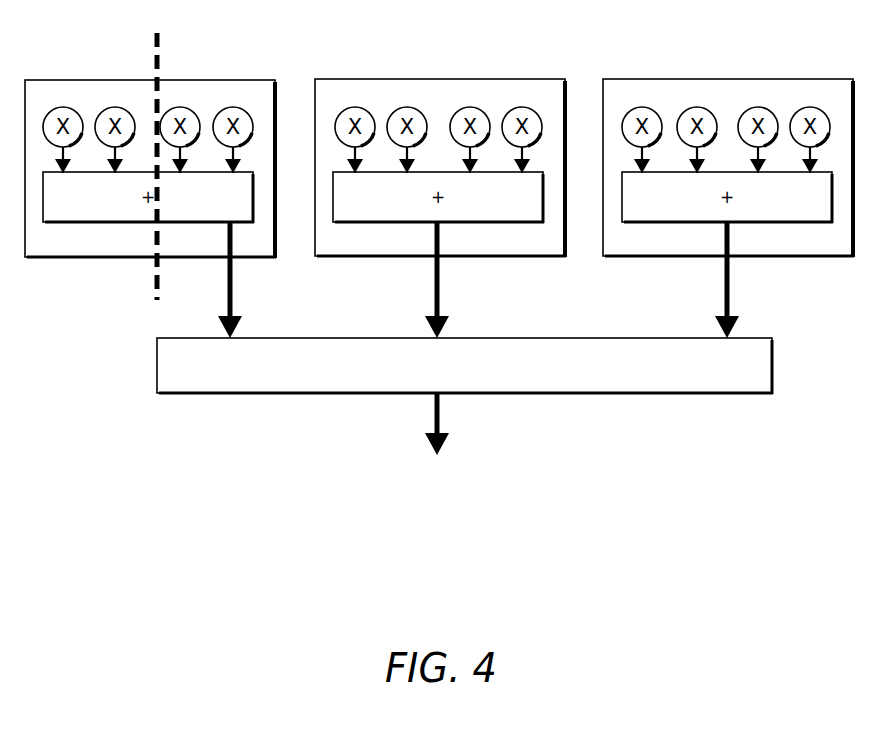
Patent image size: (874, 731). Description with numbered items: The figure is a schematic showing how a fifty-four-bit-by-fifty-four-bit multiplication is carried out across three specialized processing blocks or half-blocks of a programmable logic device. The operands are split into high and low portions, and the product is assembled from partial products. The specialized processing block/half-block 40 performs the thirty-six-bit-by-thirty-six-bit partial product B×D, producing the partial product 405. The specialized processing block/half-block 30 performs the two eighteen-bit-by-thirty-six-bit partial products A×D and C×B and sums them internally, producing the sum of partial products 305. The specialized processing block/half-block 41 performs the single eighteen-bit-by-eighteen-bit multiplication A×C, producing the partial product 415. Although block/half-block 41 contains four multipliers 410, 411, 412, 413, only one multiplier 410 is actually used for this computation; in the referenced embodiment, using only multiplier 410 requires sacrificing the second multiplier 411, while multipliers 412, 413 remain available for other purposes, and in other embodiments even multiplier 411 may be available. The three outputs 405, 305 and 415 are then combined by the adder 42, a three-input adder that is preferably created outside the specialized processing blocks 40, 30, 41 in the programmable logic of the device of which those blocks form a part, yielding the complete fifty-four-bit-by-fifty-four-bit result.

The specialized processing block/half-block 41 is at (159, 152).
The multiplier 410 is at (233, 107).
The multiplier 411 is at (180, 107).
The multiplier 412 is at (115, 107).
The multiplier 413 is at (63, 107).
The specialized processing block/half-block 30 is at (500, 79).
The specialized processing block/half-block 40 is at (727, 79).
The partial product 415 is at (234, 277).
The sum of partial products 305 is at (441, 275).
The partial product 405 is at (731, 277).
The adder 42 is at (668, 394).